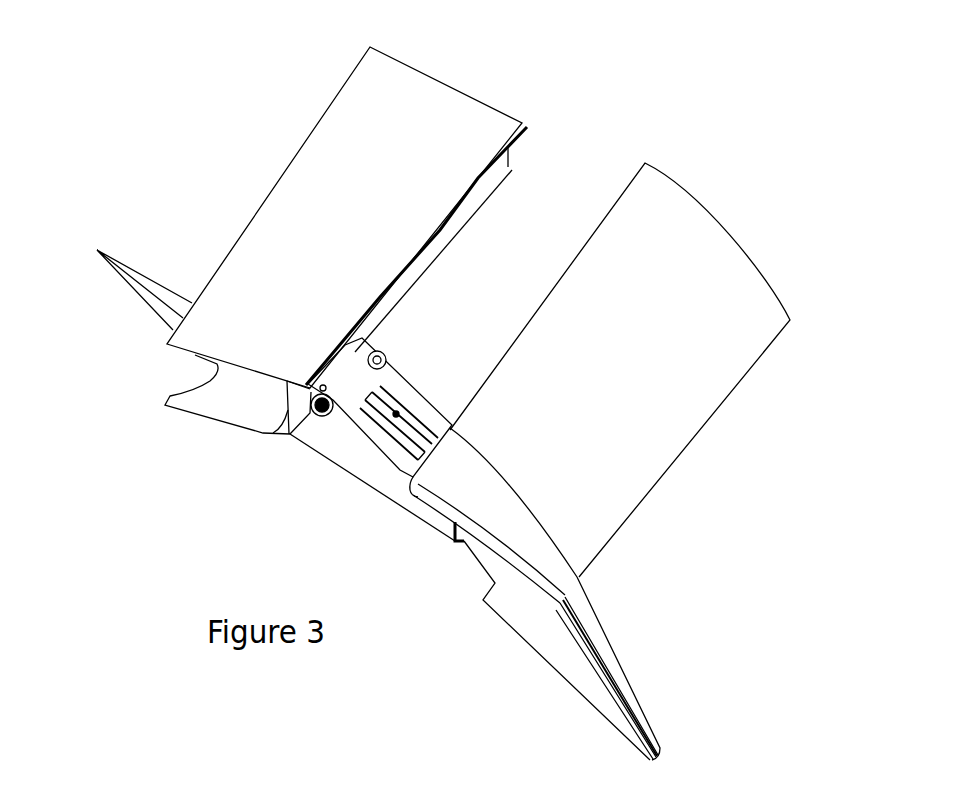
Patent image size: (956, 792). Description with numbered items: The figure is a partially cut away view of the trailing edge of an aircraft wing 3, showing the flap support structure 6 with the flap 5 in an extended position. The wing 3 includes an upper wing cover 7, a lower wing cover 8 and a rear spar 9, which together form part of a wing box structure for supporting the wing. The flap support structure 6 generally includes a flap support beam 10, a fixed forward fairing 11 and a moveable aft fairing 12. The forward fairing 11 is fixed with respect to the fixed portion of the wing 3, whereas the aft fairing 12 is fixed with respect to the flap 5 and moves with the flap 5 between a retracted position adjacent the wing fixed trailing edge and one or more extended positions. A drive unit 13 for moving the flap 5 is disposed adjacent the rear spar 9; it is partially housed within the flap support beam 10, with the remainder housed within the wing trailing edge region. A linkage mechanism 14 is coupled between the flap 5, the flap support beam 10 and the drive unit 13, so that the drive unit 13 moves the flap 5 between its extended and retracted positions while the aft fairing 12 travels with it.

The wing 3 is at (380, 202).
The flap 5 is at (732, 310).
The flap support structure 6 is at (408, 557).
The upper wing cover 7 is at (430, 112).
The lower wing cover 8 is at (223, 403).
The rear spar 9 is at (493, 173).
The flap support beam 10 is at (378, 467).
The fixed forward fairing 11 is at (138, 300).
The moveable aft fairing 12 is at (585, 685).
The drive unit 13 is at (400, 340).
The linkage mechanism 14 is at (408, 447).